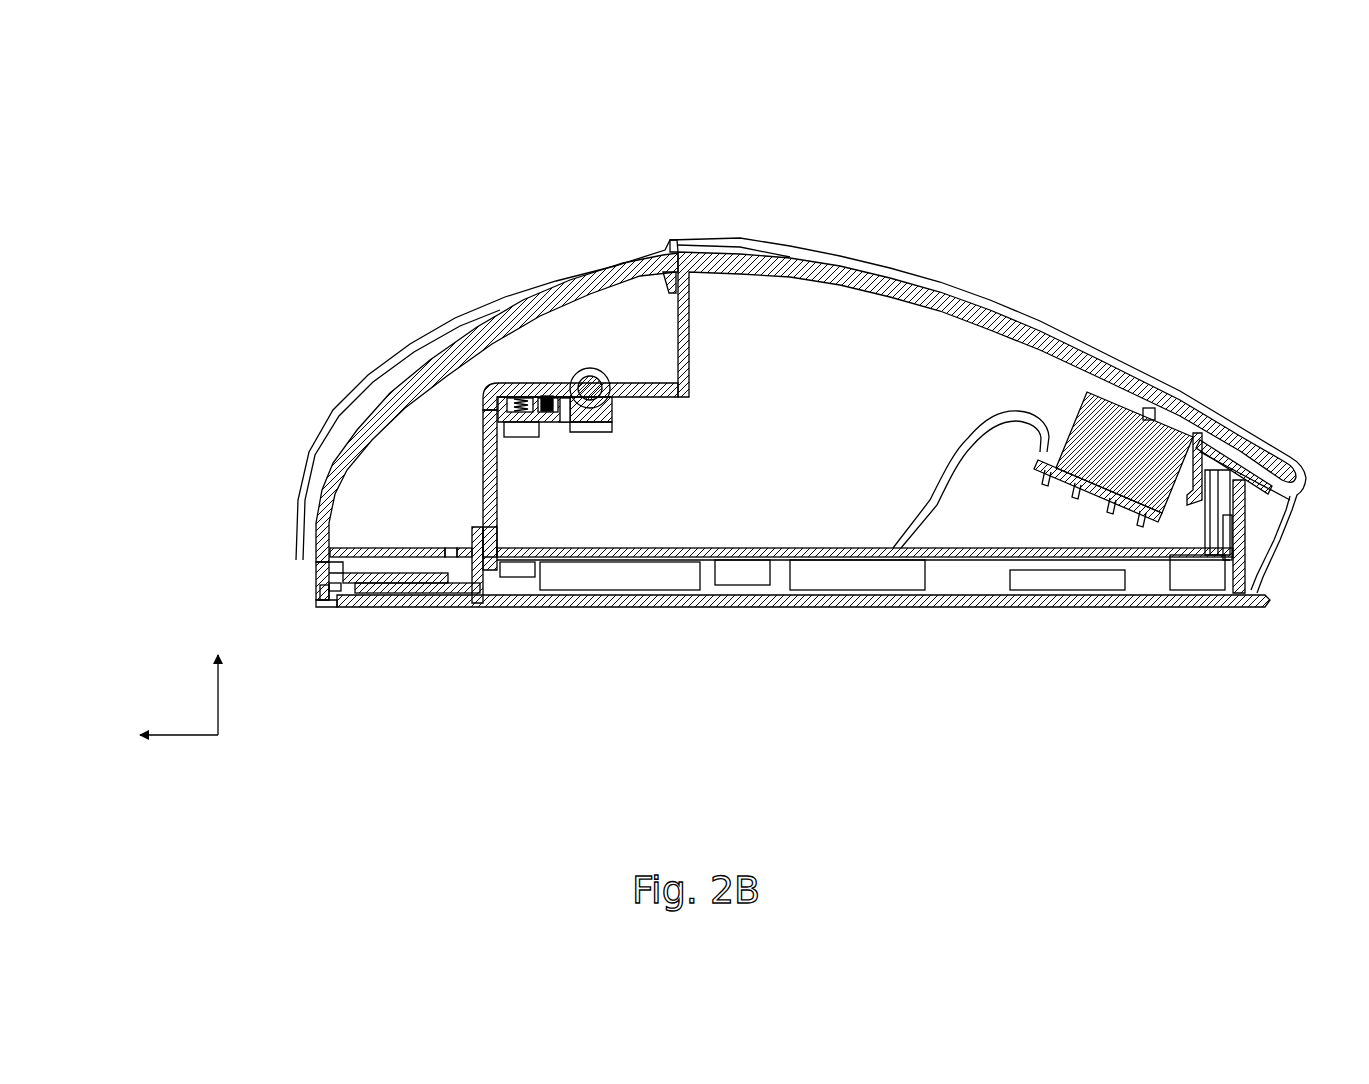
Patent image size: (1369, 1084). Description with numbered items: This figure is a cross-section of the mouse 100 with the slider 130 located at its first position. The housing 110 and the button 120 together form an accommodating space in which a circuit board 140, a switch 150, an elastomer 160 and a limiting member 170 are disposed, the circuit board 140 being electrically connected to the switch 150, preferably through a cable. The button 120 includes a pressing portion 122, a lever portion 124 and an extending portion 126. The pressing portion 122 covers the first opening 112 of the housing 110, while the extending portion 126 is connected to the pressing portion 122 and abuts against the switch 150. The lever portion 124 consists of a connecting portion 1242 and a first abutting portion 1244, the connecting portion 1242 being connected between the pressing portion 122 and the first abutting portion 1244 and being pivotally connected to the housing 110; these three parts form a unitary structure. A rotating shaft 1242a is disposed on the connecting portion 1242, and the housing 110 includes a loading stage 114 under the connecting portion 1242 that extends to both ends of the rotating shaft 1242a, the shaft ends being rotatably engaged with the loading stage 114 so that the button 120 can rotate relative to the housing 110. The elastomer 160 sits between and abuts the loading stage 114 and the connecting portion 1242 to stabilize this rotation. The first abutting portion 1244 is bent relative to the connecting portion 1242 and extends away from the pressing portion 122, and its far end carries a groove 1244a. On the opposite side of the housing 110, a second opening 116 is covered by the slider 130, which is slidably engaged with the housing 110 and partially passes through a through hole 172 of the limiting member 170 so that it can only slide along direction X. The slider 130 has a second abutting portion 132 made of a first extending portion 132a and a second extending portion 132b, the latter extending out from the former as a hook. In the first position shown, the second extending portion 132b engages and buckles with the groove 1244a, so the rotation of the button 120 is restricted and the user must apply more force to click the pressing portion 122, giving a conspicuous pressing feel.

The mouse 100 is at (195, 115).
The housing 110 is at (556, 284).
The first opening 112 is at (660, 247).
The loading stage 114 is at (579, 425).
The second opening 116 is at (434, 614).
The button 120 is at (908, 250).
The pressing portion 122 is at (787, 246).
The lever portion 124 is at (232, 366).
The connecting portion 1242 is at (476, 328).
The rotating shaft 1242a is at (589, 368).
The first abutting portion 1244 is at (481, 483).
The groove 1244a is at (478, 520).
The extending portion 126 is at (1150, 407).
The slider 130 is at (470, 606).
The second abutting portion 132 is at (212, 512).
The first extending portion 132a is at (315, 556).
The second extending portion 132b is at (468, 549).
The circuit board 140 is at (836, 560).
The switch 150 is at (1118, 410).
The elastomer 160 is at (546, 425).
The limiting member 170 is at (383, 607).
The through hole 172 is at (448, 606).